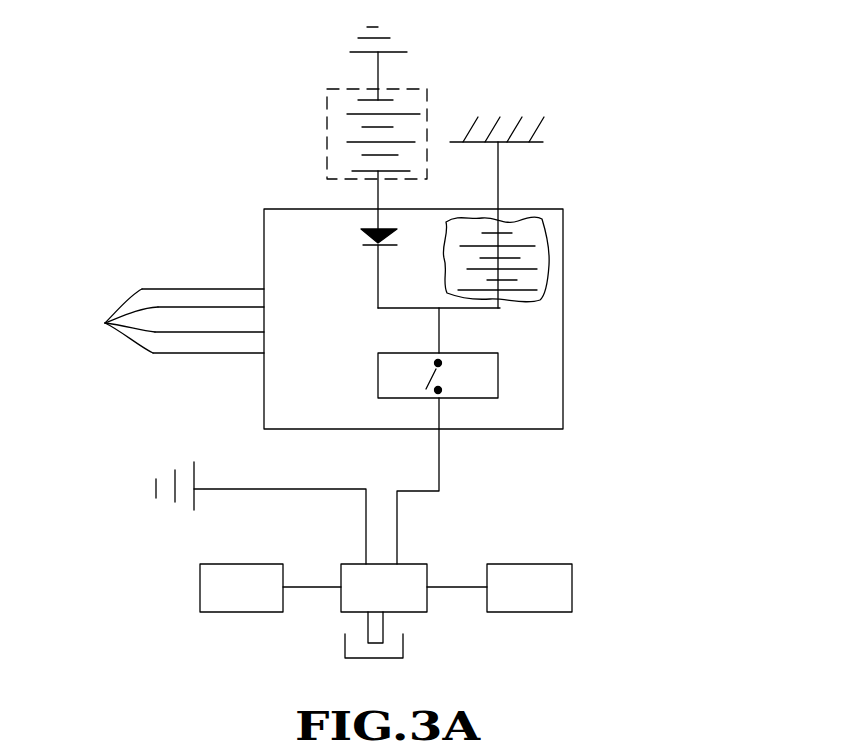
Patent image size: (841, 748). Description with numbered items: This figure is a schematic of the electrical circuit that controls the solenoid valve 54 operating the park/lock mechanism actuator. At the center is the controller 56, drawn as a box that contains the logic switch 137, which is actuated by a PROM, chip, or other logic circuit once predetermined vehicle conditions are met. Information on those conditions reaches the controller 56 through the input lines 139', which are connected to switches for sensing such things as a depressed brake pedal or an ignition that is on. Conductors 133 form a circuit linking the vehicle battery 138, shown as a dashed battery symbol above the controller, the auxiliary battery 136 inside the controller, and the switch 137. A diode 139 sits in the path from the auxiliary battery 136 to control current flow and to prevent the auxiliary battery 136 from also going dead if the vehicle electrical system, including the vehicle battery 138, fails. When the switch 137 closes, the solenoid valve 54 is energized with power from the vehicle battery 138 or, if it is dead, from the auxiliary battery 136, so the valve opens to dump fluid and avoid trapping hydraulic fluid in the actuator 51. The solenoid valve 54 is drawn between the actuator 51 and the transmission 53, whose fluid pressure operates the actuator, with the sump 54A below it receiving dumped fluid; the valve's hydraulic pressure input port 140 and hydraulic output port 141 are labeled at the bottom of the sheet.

The controller 56 is at (262, 221).
The vehicle battery 138 is at (327, 132).
The diode 139 is at (343, 281).
The input lines 139' is at (156, 321).
The auxiliary battery 136 is at (535, 260).
The logic switch 137 is at (478, 373).
The conductors 133 is at (438, 462).
The solenoid valve 54 is at (410, 564).
The actuator 51 is at (234, 564).
The transmission 53 is at (550, 565).
The sump 54A is at (403, 650).
The hydraulic pressure input port 140 is at (241, 743).
The hydraulic output port 141 is at (746, 743).